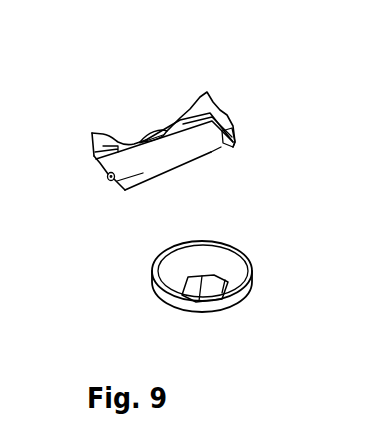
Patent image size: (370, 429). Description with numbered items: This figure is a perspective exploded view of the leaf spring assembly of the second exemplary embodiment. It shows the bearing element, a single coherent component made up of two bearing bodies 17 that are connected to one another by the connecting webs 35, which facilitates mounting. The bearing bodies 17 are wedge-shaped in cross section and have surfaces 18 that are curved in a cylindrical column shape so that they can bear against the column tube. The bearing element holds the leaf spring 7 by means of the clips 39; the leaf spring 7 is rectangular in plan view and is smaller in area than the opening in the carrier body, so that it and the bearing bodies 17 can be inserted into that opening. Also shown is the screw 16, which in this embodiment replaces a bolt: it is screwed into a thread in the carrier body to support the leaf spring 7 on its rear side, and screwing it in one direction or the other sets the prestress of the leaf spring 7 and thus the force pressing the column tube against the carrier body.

The leaf spring 7 is at (157, 161).
The screw 16 is at (250, 270).
The bearing bodies 17 is at (102, 145).
The surfaces 18 is at (192, 100).
The connecting webs 35 is at (163, 135).
The clips 39 is at (108, 181).